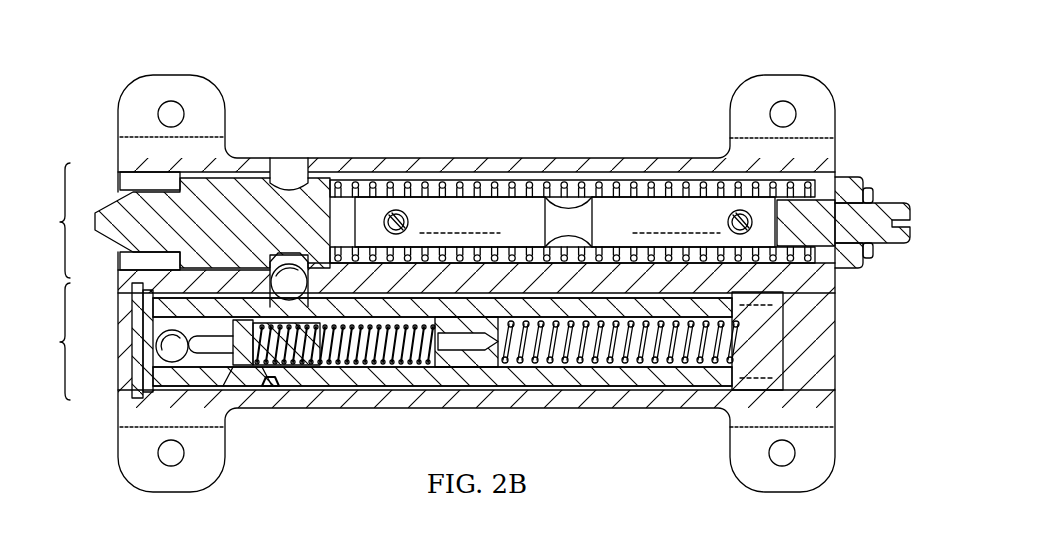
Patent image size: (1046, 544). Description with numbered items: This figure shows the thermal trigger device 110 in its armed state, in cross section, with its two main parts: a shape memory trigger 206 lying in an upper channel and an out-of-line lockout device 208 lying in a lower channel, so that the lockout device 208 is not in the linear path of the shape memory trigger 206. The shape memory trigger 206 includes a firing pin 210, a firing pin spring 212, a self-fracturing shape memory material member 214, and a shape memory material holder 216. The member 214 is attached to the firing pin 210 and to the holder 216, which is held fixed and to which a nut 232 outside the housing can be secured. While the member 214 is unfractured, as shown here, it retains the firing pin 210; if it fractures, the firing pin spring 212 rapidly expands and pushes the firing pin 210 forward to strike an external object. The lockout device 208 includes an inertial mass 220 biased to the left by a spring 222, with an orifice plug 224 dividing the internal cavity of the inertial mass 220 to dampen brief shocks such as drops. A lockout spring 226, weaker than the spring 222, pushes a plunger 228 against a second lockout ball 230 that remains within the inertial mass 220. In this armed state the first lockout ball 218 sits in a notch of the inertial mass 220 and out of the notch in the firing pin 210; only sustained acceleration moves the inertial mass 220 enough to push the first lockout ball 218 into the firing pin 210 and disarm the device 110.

The thermal trigger device 110 is at (666, 45).
The shape memory trigger 206 is at (101, 220).
The out-of-line lockout device 208 is at (377, 341).
The firing pin 210 is at (112, 212).
The firing pin spring 212 is at (518, 180).
The self-fracturing shape memory material member 214 is at (683, 204).
The shape memory material holder 216 is at (896, 203).
The first lockout ball 218 is at (289, 264).
The inertial mass 220 is at (580, 390).
The spring 222 is at (783, 352).
The orifice plug 224 is at (476, 370).
The lockout spring 226 is at (368, 369).
The plunger 228 is at (291, 390).
The second lockout ball 230 is at (160, 351).
The nut 232 is at (851, 178).